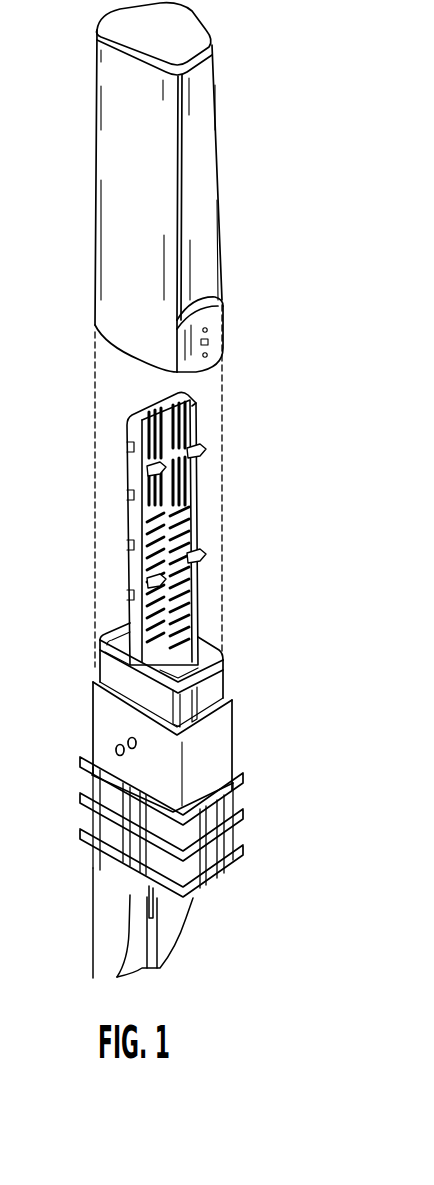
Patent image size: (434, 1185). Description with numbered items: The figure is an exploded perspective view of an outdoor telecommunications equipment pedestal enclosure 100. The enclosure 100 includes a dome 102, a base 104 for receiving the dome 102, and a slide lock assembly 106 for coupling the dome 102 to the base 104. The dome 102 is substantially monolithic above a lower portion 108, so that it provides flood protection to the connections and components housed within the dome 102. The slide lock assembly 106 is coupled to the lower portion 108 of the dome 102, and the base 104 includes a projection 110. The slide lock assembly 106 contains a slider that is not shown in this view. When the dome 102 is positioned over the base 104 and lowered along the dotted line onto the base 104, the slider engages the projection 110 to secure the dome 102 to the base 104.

The outdoor telecommunications equipment pedestal enclosure 100 is at (183, 490).
The dome 102 is at (222, 207).
The base 104 is at (217, 760).
The slide lock assembly 106 is at (210, 342).
The lower portion 108 is at (123, 333).
The projection 110 is at (218, 672).